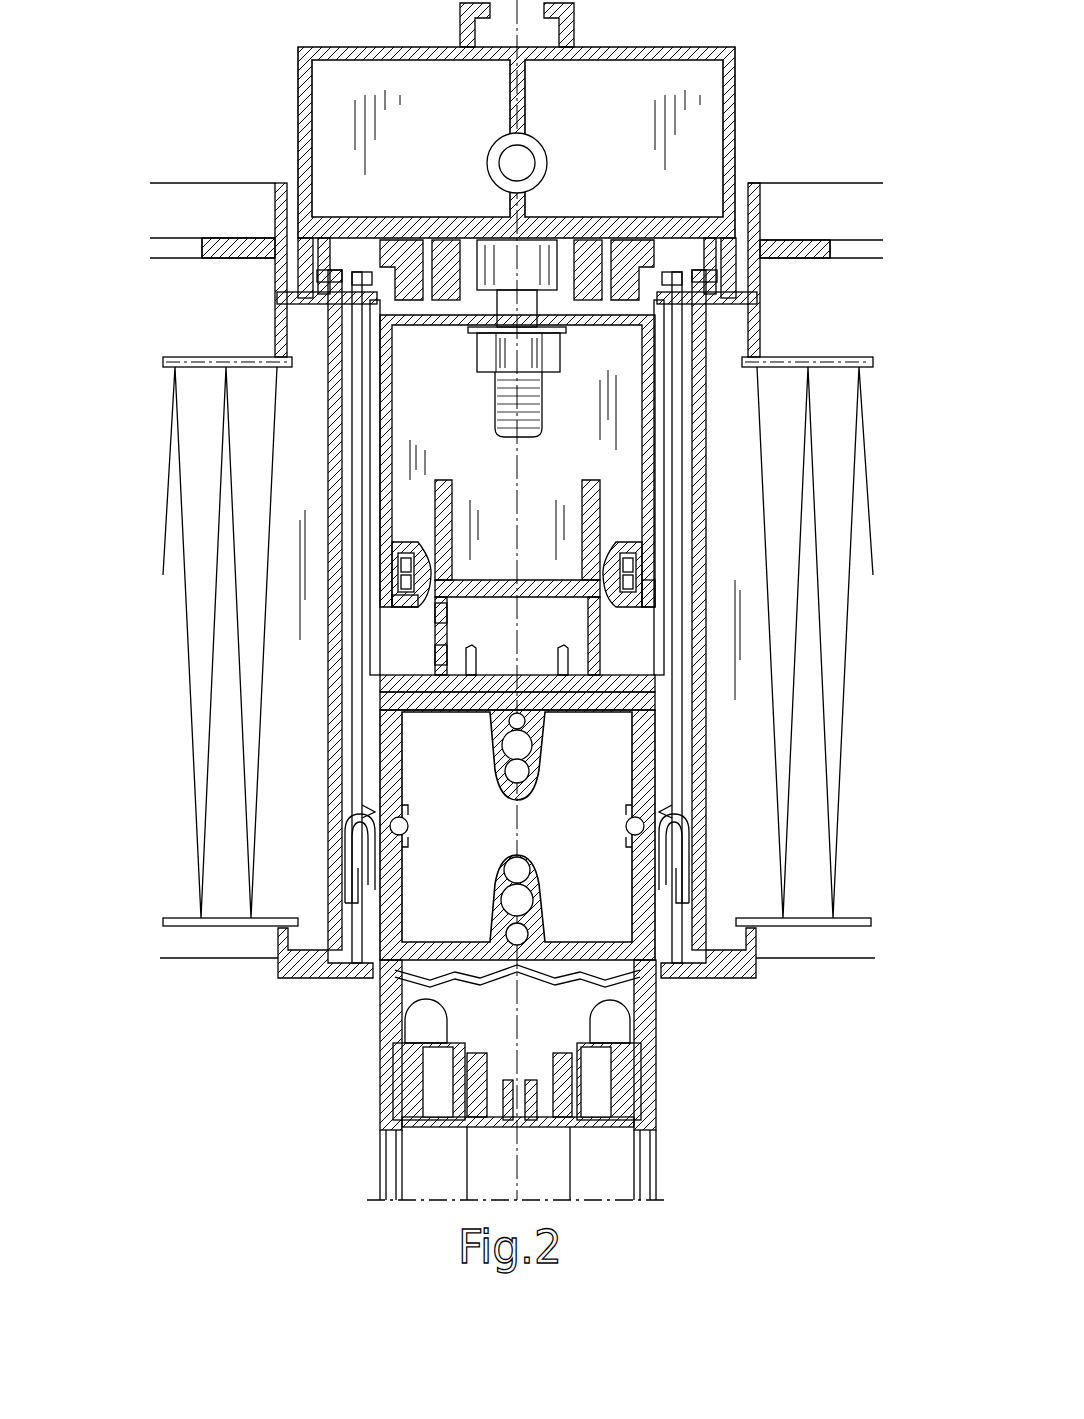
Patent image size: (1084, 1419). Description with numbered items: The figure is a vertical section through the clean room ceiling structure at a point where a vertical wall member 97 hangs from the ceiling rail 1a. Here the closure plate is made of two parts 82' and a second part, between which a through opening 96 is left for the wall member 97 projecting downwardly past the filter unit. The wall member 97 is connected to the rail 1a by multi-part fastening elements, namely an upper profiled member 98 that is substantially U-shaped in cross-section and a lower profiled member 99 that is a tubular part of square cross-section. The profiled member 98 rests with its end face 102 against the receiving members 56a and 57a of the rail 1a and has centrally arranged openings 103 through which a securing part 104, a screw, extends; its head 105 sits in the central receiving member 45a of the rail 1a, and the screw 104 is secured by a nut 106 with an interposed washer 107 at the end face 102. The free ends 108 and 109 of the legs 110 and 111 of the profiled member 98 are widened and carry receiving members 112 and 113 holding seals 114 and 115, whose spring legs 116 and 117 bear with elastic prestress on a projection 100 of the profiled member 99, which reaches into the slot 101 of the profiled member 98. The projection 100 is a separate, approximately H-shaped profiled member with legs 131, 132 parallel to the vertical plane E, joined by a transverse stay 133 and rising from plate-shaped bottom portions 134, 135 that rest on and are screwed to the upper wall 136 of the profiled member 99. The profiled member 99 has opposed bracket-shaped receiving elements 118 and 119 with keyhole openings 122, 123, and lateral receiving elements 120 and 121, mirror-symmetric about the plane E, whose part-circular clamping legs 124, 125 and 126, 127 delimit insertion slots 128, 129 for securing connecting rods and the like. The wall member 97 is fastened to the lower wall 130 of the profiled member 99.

The rail 1a is at (740, 67).
The head 105 is at (593, 240).
The openings 103 is at (525, 300).
The washer 107 is at (498, 300).
The receiving member 45a is at (460, 325).
The nut 106 is at (563, 358).
The securing part 104 is at (494, 398).
The receiving member 57a is at (363, 311).
The receiving member 56a is at (703, 270).
The end face 102 is at (755, 290).
The leg 110 is at (664, 423).
The leg 111 is at (372, 450).
The profiled member 98 is at (664, 473).
The free end 108 is at (657, 601).
The leg 132 is at (433, 498).
The leg 131 is at (603, 522).
The slot 101 is at (437, 617).
The projection 100 is at (610, 650).
The transverse stay 133 is at (435, 612).
The bottom portion 135 is at (435, 656).
The bottom portion 134 is at (631, 676).
The upper wall 136 is at (635, 708).
The receiving member 113 is at (397, 563).
The seal 115 is at (392, 556).
The spring leg 117 is at (393, 582).
The free end 109 is at (382, 603).
The seal 114 is at (653, 545).
The spring leg 116 is at (649, 560).
The receiving member 112 is at (653, 581).
The profiled member 99 is at (664, 757).
The keyhole opening 122 is at (510, 748).
The receiving element 119 is at (533, 752).
The keyhole opening 123 is at (510, 908).
The receiving element 118 is at (545, 917).
The insertion slot 129 is at (420, 825).
The insertion slot 128 is at (623, 825).
The receiving element 121 is at (373, 830).
The clamping leg 126 is at (377, 812).
The clamping leg 127 is at (373, 857).
The receiving element 120 is at (694, 835).
The clamping leg 124 is at (690, 814).
The clamping leg 125 is at (696, 855).
The closure plate part 82' is at (304, 999).
The lower wall 130 is at (762, 968).
The through opening 96 is at (375, 977).
The wall member 97 is at (664, 1128).
The vertical plane E is at (520, 1020).